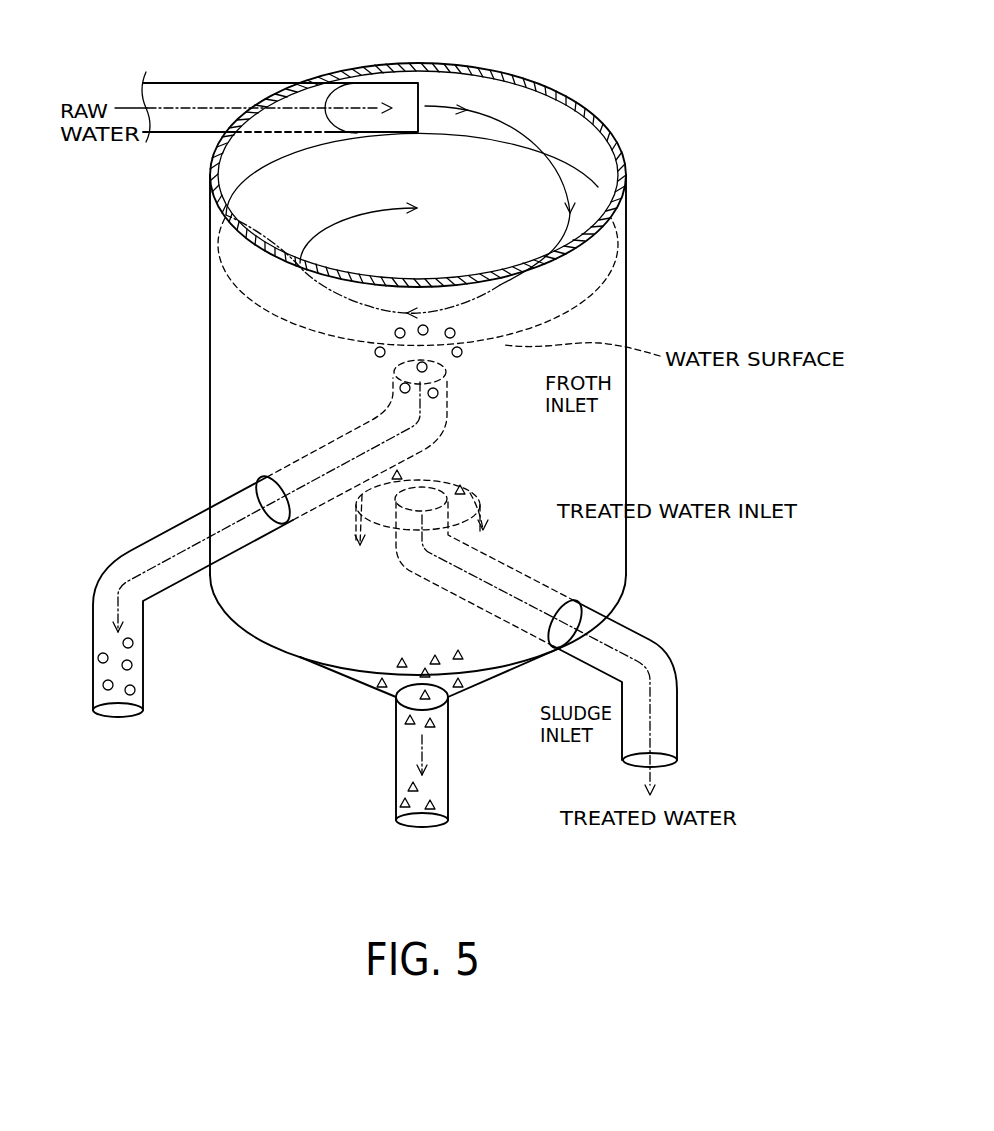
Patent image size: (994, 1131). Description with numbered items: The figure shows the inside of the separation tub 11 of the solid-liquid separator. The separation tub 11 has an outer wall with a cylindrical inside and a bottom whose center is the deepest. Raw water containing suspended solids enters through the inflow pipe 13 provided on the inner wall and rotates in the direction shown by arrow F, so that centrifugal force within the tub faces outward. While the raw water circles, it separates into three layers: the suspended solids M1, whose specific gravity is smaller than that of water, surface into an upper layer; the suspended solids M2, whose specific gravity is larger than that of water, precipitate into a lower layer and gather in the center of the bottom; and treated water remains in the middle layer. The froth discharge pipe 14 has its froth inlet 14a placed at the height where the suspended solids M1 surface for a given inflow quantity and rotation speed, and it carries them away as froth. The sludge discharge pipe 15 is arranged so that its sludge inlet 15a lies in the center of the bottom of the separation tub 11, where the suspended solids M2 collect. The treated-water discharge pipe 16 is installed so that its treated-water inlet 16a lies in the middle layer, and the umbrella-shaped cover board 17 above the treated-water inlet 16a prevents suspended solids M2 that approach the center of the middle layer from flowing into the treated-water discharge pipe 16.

The separation tub 11 is at (613, 135).
The inflow pipe 13 is at (211, 83).
The froth discharge pipe 14 is at (147, 540).
The froth inlet 14a is at (448, 372).
The sludge discharge pipe 15 is at (395, 748).
The sludge inlet 15a is at (453, 695).
The treated-water discharge pipe 16 is at (678, 703).
The treated-water inlet 16a is at (450, 499).
The cover board 17 is at (427, 464).
The rotation direction arrow F is at (500, 141).
The suspended solids with specific gravity smaller than water M1 is at (373, 354).
The suspended solids with specific gravity larger than water M2 is at (465, 487).